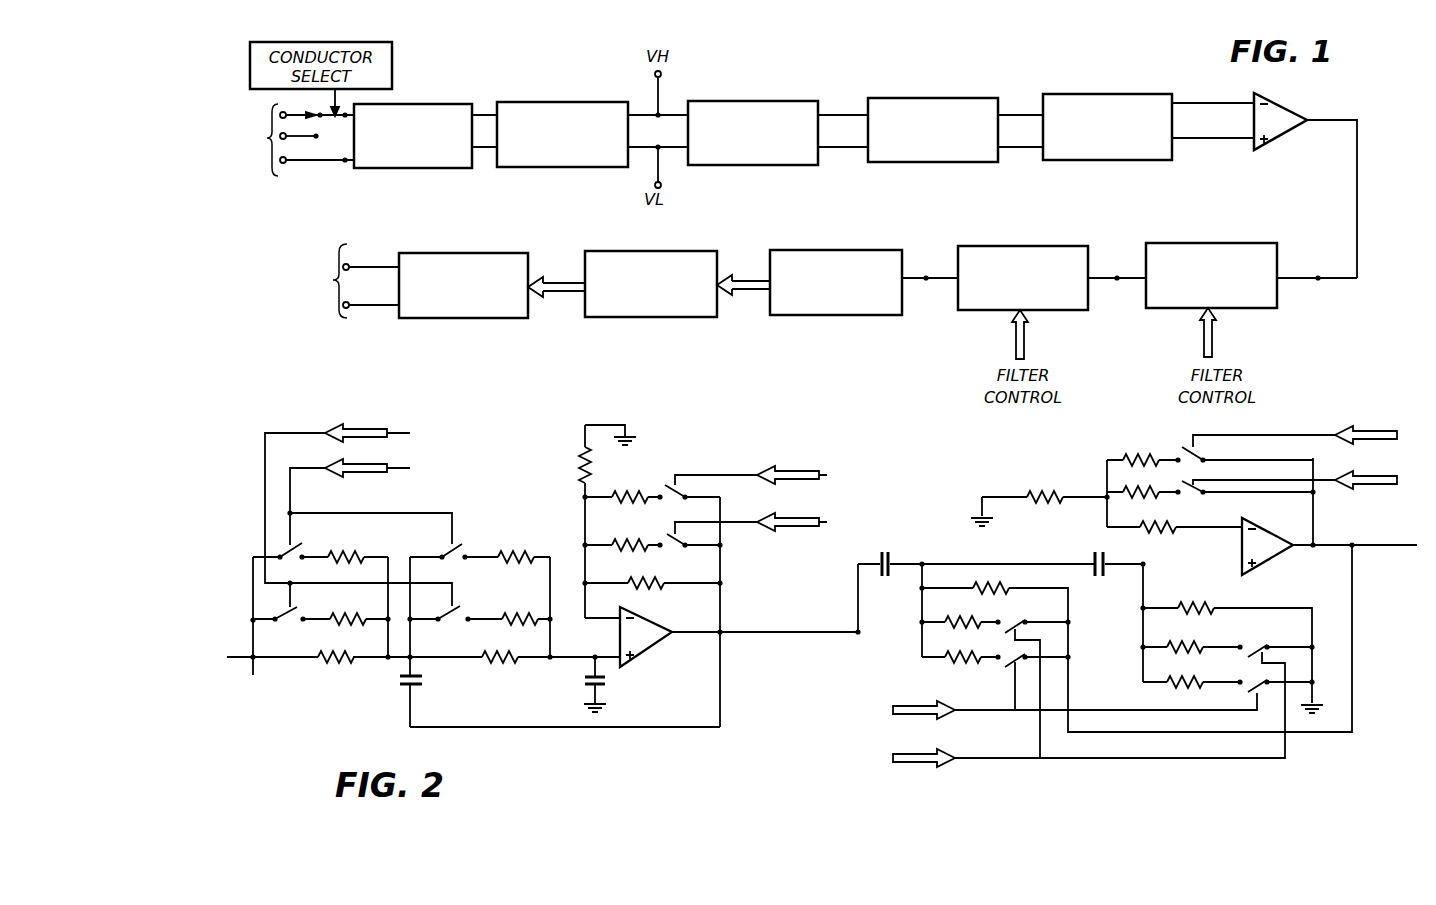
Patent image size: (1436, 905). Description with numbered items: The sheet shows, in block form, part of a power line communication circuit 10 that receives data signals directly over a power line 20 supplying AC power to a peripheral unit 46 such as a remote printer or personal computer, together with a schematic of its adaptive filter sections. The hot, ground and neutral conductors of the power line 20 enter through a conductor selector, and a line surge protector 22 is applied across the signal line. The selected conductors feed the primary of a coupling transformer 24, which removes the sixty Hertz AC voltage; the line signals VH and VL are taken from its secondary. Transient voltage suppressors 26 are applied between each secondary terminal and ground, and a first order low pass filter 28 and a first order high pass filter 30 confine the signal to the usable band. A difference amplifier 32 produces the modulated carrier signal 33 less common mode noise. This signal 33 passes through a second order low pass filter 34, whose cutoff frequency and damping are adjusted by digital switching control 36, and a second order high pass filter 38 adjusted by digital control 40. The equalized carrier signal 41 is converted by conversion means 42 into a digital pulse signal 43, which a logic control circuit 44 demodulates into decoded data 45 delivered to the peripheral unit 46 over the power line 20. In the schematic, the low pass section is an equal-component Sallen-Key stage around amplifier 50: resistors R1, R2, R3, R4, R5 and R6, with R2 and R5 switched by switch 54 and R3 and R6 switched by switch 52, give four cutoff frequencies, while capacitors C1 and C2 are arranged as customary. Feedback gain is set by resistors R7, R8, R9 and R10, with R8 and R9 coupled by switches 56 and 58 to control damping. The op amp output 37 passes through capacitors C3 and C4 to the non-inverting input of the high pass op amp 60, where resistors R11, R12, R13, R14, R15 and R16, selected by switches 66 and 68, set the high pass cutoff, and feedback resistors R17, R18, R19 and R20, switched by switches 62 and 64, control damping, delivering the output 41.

In FIG. 1, the power line communication circuit 10 is at (1369, 108).
In FIG. 1, the power line 20 is at (311, 209).
In FIG. 1, the line surge protector 22 is at (446, 168).
In FIG. 1, the coupling transformer 24 is at (531, 102).
In FIG. 1, the transient voltage suppressors 26 is at (731, 97).
In FIG. 1, the first order low pass filter 28 is at (934, 96).
In FIG. 1, the first order high pass filter 30 is at (1090, 94).
In FIG. 1, the difference amplifier 32 is at (1280, 113).
In FIG. 1, the modulated carrier signal 33 is at (1318, 282).
In FIG. 2, the modulated carrier signal 33 is at (251, 678).
In FIG. 1, the second order low pass filter 34 is at (1250, 243).
In FIG. 1, the digital switching control 36 is at (1212, 337).
In FIG. 2, the op amp output 37 is at (858, 636).
In FIG. 1, the second order high pass filter 38 is at (1042, 246).
In FIG. 1, the digital control 40 is at (1024, 337).
In FIG. 1, the carrier signal 41 is at (926, 277).
In FIG. 2, the carrier signal 41 is at (1356, 550).
In FIG. 1, the conversion means 42 is at (865, 250).
In FIG. 1, the digital pulse signal 43 is at (750, 292).
In FIG. 1, the logic control circuit 44 is at (708, 242).
In FIG. 1, the decoded data 45 is at (560, 296).
In FIG. 1, the peripheral unit 46 is at (477, 253).
In FIG. 2, the amplifier 50 is at (650, 646).
In FIG. 2, the switch 52 is at (369, 499).
In FIG. 2, the switch 54 is at (358, 512).
In FIG. 2, the switch 56 is at (771, 520).
In FIG. 2, the switch 58 is at (771, 471).
In FIG. 2, the high pass section op amp 60 is at (1272, 559).
In FIG. 2, the switch 62 is at (1397, 436).
In FIG. 2, the switch 64 is at (1397, 481).
In FIG. 2, the switch 66 is at (892, 712).
In FIG. 2, the switch 68 is at (893, 760).
In FIG. 2, the resistor R1 is at (340, 666).
In FIG. 2, the resistor R2 is at (320, 605).
In FIG. 2, the resistor R3 is at (320, 542).
In FIG. 2, the resistor R4 is at (515, 666).
In FIG. 2, the resistor R5 is at (529, 612).
In FIG. 2, the resistor R6 is at (520, 547).
In FIG. 2, the resistor R7 is at (654, 585).
In FIG. 2, the resistor R8 is at (639, 543).
In FIG. 2, the resistor R9 is at (641, 495).
In FIG. 2, the resistor R10 is at (580, 465).
In FIG. 2, the resistor R11 is at (1010, 588).
In FIG. 2, the resistor R12 is at (966, 605).
In FIG. 2, the resistor R13 is at (963, 642).
In FIG. 2, the resistor R14 is at (1187, 679).
In FIG. 2, the resistor R15 is at (1190, 643).
In FIG. 2, the resistor R16 is at (1201, 604).
In FIG. 2, the resistor R17 is at (1149, 516).
In FIG. 2, the resistor R18 is at (1211, 480).
In FIG. 2, the resistor R19 is at (1144, 458).
In FIG. 2, the resistor R20 is at (1051, 495).
In FIG. 2, the capacitor C1 is at (396, 682).
In FIG. 2, the capacitor C2 is at (607, 681).
In FIG. 2, the capacitor C3 is at (884, 556).
In FIG. 2, the capacitor C4 is at (1096, 548).